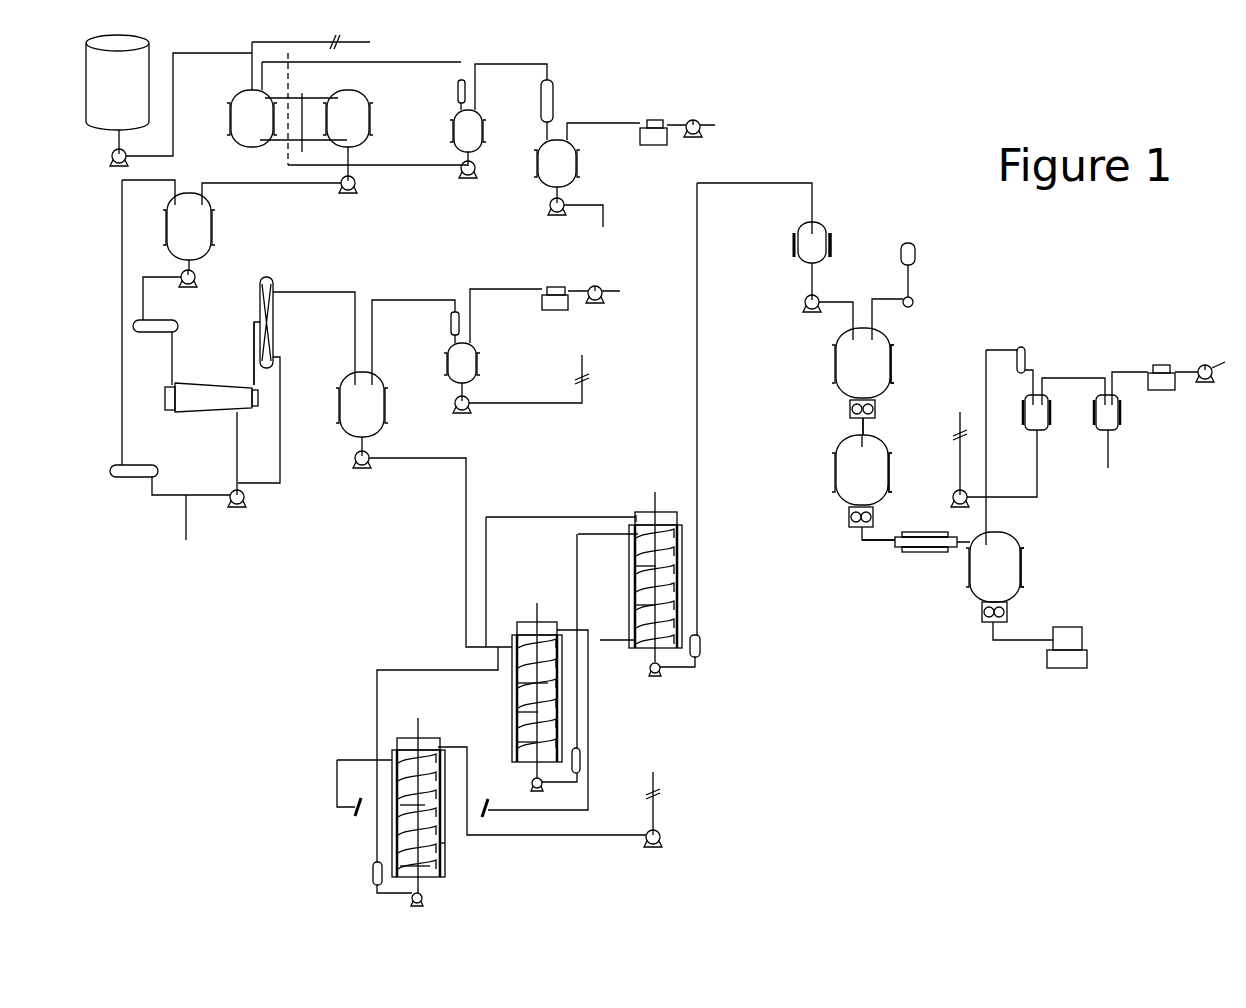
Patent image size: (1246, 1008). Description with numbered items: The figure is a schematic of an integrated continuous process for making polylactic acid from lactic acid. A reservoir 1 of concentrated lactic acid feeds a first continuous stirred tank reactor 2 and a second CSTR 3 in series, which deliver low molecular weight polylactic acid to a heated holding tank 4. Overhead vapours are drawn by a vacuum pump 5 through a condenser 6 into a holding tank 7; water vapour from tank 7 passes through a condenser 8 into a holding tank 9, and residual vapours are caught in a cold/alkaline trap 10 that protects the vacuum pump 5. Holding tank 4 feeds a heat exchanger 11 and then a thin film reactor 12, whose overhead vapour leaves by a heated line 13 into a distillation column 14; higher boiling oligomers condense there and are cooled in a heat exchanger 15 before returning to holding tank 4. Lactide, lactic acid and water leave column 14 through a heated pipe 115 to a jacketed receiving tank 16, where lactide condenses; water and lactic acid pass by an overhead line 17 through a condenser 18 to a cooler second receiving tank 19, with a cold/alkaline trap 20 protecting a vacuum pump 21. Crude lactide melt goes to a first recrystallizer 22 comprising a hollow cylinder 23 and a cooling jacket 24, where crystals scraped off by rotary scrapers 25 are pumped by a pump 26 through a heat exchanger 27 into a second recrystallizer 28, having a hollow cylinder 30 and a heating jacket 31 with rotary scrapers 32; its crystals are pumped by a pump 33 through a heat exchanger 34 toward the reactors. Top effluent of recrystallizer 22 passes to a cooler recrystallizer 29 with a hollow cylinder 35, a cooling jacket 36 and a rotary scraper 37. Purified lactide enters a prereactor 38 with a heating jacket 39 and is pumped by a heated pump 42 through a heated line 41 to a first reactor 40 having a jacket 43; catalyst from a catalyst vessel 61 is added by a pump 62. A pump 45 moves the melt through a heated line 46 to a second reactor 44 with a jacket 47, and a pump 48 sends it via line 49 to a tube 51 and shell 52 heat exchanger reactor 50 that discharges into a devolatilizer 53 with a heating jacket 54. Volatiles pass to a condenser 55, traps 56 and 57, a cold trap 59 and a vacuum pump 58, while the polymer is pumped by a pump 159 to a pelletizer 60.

The reservoir 1 is at (117, 100).
The continuous stirred tank reactor 2 is at (252, 118).
The second continuous stirred tank reactor 3 is at (348, 118).
The holding tank 4 is at (189, 240).
The vacuum pump 5 is at (693, 118).
The condenser 6 is at (453, 91).
The holding tank 7 is at (468, 144).
The condenser 8 is at (555, 101).
The holding tank 9 is at (557, 177).
The cold/alkaline trap 10 is at (653, 123).
The heat exchanger 11 is at (155, 316).
The reactor 12 is at (211, 397).
The line 13 is at (241, 353).
The distillation column 14 is at (280, 322).
The heat exchanger 15 is at (134, 462).
The line or pipe 115 is at (314, 322).
The receiving tank 16 is at (362, 420).
The overhead line 17 is at (413, 326).
The condenser 18 is at (440, 324).
The second receiving tank 19 is at (462, 378).
The cold/alkaline trap 20 is at (555, 311).
The vacuum pump 21 is at (597, 305).
The first recrystallizer 22 is at (537, 681).
The hollow cylinder 23 is at (528, 688).
The cooling jacket 24 is at (518, 717).
The rotary scrapers 25 is at (527, 739).
The pump 26 is at (523, 782).
The heat exchanger 27 is at (582, 762).
The second recrystallizer 28 is at (655, 567).
The cooler recrystallizer 29 is at (418, 793).
The hollow cylinder 30 is at (645, 522).
The heat jacket 31 is at (630, 566).
The rotary scrapers 32 is at (642, 606).
The pump 33 is at (644, 678).
The heat exchanger 34 is at (707, 646).
The hollow cylinder 35 is at (425, 808).
The cooling jacket 36 is at (447, 843).
The rotary scraper 37 is at (430, 865).
The prereactor 38 is at (812, 242).
The heating jacket 39 is at (832, 243).
The first reactor 40 is at (863, 363).
The heated line 41 is at (836, 306).
The pump 42 is at (800, 303).
The jacket 43 is at (894, 353).
The second reactor 44 is at (862, 470).
The pump 45 is at (874, 409).
The heated or insulated line 46 is at (861, 430).
The jacket 47 is at (892, 463).
The pump 48 is at (848, 517).
The line 49 is at (878, 552).
The reactor or preheater 50 is at (898, 557).
The tube 51 is at (917, 552).
The shell 52 is at (917, 532).
The devolatilizer 53 is at (995, 567).
The heating jacket 54 is at (1024, 555).
The condenser 55 is at (1033, 360).
The trap 56 is at (1049, 412).
The trap 57 is at (1119, 412).
The vacuum pump 58 is at (1207, 384).
The cold trap 59 is at (1161, 367).
The pelletizer 60 is at (1067, 659).
The catalyst vessel 61 is at (919, 254).
The pump 62 is at (921, 302).
The pump 159 is at (975, 612).